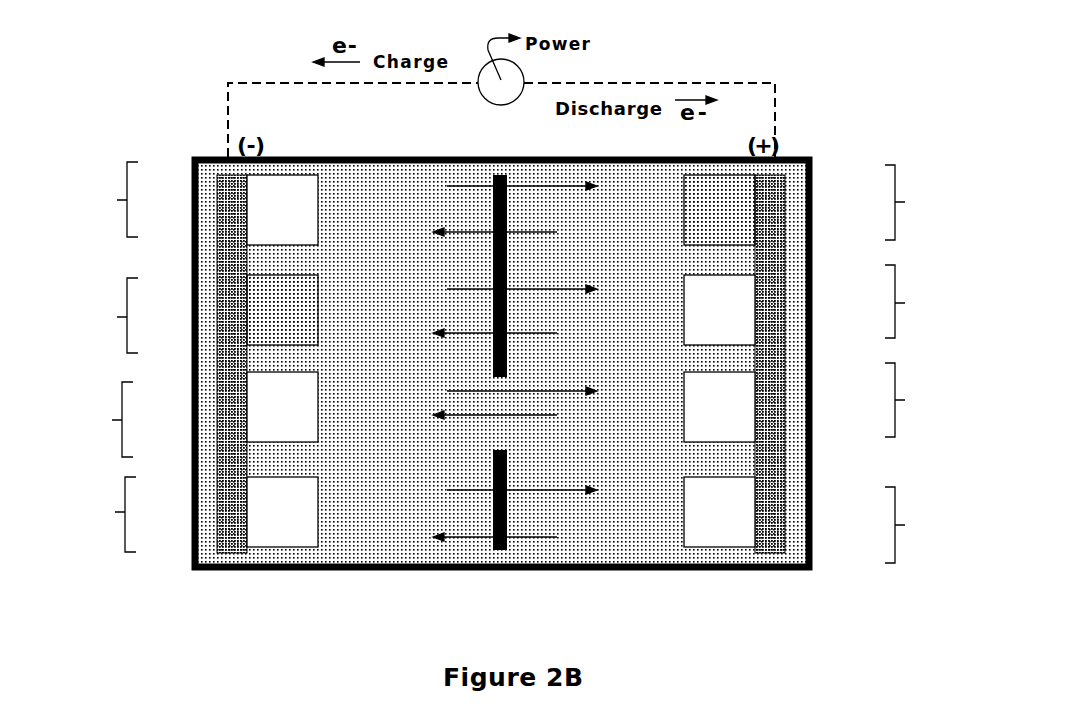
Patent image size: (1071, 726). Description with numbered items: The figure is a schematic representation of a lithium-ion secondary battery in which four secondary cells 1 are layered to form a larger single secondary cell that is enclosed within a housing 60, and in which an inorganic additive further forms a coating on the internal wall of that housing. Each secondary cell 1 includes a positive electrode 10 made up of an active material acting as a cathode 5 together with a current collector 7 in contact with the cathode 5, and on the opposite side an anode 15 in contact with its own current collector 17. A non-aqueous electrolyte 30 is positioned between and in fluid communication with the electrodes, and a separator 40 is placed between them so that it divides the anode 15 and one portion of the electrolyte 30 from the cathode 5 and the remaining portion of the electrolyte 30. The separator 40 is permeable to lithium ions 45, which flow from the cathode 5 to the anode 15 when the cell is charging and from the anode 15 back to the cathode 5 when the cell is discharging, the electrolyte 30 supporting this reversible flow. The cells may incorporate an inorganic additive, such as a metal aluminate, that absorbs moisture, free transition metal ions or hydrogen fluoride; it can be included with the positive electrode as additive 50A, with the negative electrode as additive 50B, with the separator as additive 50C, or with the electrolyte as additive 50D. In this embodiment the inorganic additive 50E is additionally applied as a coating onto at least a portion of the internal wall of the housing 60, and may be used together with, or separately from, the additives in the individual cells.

The secondary lithium-ion cell 1 is at (104, 171).
The cathode 5 is at (813, 108).
The current collector 7 is at (775, 193).
The positive electrode 10 is at (506, 362).
The anode 15 is at (250, 224).
The current collector 17 is at (250, 185).
The non-aqueous electrolyte 30 is at (352, 193).
The separator 40 is at (520, 172).
The lithium ions 45 is at (660, 187).
The inorganic additive 50A is at (707, 230).
The inorganic additive 50B is at (313, 292).
The inorganic additive 50C is at (503, 400).
The inorganic additive 50D is at (643, 527).
The inorganic additive 50E is at (275, 557).
The housing 60 is at (318, 570).